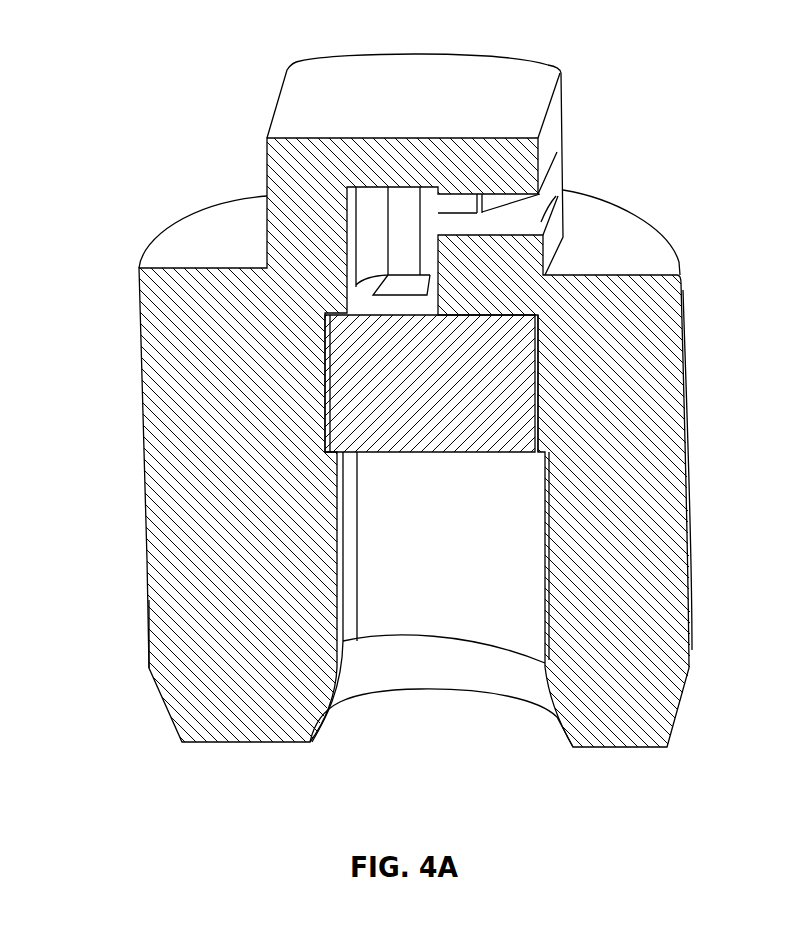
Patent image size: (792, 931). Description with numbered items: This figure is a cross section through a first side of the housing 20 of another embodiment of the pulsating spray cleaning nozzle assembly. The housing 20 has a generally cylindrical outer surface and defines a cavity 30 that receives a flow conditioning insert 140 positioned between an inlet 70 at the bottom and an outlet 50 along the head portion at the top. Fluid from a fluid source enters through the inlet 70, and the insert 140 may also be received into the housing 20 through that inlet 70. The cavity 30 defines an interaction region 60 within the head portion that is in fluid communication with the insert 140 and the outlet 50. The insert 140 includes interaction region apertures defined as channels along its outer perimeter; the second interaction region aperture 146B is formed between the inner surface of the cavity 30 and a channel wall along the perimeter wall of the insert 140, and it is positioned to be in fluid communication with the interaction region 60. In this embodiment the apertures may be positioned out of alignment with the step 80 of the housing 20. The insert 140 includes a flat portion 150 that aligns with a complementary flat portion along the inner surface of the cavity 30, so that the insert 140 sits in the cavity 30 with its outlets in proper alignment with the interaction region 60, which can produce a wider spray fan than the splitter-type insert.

The housing 20 is at (652, 508).
The cavity 30 is at (497, 550).
The outlet 50 is at (540, 195).
The interaction region 60 is at (388, 205).
The inlet 70 is at (472, 693).
The step 80 is at (520, 297).
The flow conditioning insert 140 is at (540, 380).
The second interaction region aperture 146B is at (388, 275).
The flat portion 150 is at (325, 390).